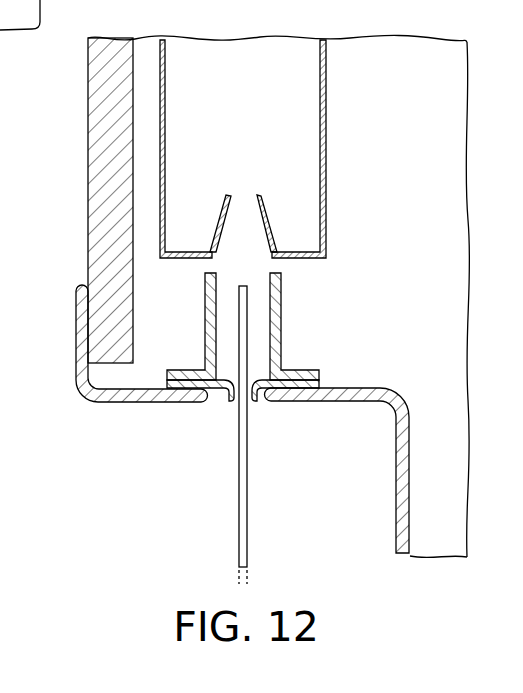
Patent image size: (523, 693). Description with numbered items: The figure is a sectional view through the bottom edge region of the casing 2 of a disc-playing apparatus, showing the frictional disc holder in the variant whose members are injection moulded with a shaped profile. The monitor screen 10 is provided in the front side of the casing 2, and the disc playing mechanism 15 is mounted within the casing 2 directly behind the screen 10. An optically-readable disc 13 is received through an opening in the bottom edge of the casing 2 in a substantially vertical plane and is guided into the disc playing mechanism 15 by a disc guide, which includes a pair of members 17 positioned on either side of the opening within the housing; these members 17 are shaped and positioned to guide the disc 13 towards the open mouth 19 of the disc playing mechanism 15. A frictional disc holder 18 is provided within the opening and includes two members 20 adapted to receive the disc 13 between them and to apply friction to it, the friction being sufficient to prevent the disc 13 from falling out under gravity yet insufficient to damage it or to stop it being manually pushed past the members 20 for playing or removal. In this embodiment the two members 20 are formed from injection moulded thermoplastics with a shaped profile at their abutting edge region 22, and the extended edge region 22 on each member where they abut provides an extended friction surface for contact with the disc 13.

The casing 2 is at (398, 480).
The monitor screen 10 is at (88, 182).
The optically-readable disc 13 is at (239, 528).
The disc playing mechanism 15 is at (345, 176).
The members of the disc guide 17 is at (281, 333).
The frictional disc holder 18 is at (198, 420).
The open mouth 19 is at (258, 198).
The members of the frictional disc holder 20 is at (255, 402).
The abutting edge region 22 is at (233, 402).